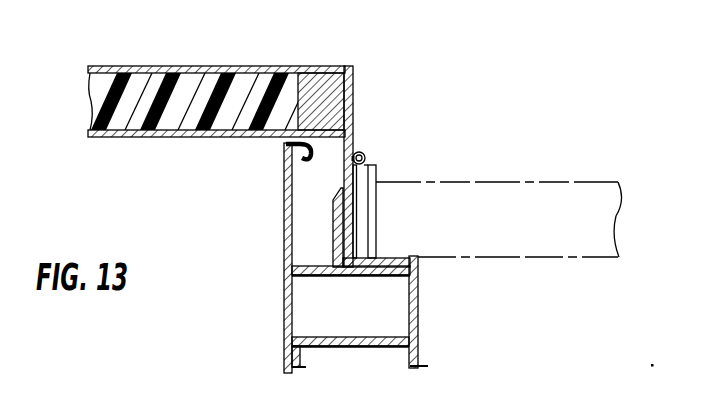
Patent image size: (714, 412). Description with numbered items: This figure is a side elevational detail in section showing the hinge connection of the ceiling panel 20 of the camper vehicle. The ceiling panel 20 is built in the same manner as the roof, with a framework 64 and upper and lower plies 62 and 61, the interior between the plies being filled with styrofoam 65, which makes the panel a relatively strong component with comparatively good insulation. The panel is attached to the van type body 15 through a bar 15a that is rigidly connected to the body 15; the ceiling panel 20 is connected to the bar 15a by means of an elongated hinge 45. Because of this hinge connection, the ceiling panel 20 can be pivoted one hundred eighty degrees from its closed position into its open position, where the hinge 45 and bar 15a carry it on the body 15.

The van type body 15 is at (283, 172).
The bar 15a is at (333, 222).
The ceiling panel 20 is at (212, 66).
The elongated hinge 45 is at (354, 117).
The lower ply 61 is at (118, 66).
The upper ply 62 is at (92, 135).
The framework 64 is at (328, 93).
The styrofoam 65 is at (103, 94).